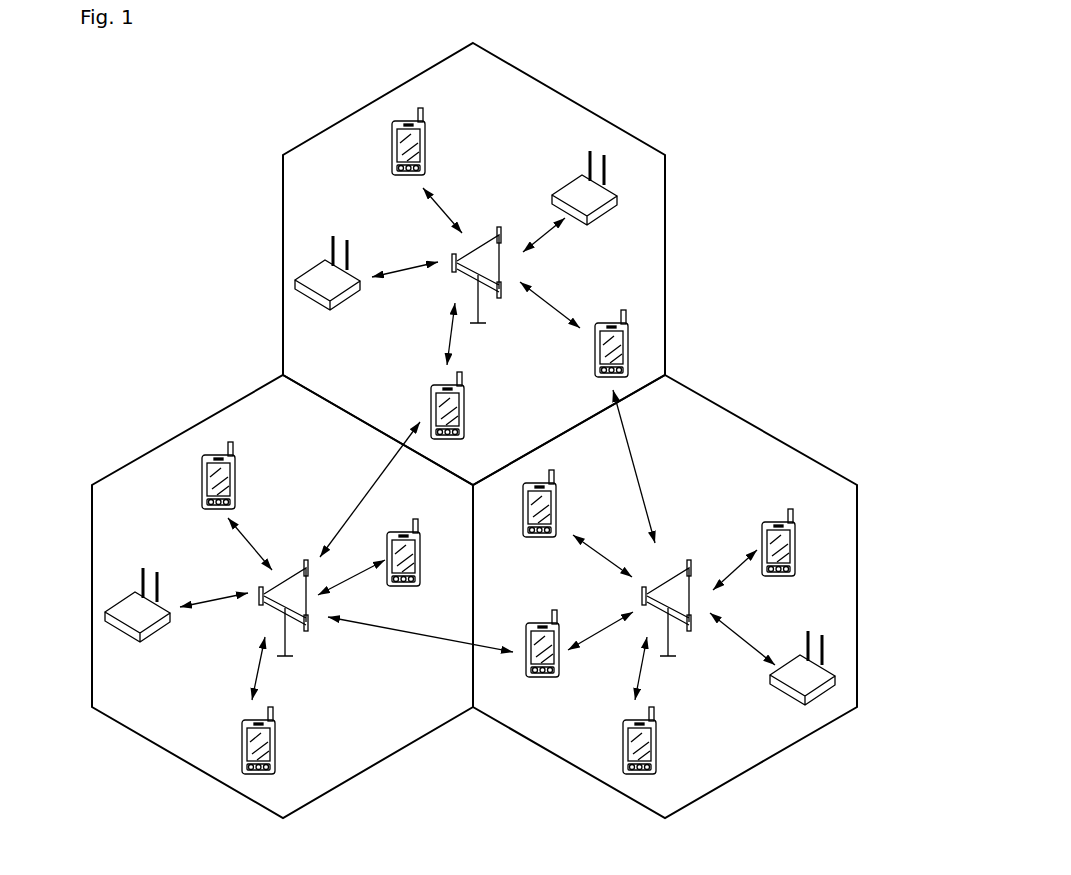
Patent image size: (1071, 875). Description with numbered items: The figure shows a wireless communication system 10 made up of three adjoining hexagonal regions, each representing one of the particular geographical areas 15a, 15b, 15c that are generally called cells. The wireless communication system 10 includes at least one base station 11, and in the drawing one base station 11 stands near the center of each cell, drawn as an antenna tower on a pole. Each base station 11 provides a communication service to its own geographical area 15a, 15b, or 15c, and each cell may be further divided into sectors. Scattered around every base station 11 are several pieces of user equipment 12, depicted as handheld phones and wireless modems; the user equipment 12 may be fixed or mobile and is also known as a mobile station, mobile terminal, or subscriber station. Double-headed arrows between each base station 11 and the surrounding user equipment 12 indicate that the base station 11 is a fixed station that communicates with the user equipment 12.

The wireless communication system 10 is at (748, 158).
The base station 11 is at (490, 237).
The user equipment 12 is at (426, 148).
The geographical area 15a is at (665, 253).
The geographical area 15b is at (790, 447).
The geographical area 15c is at (162, 446).